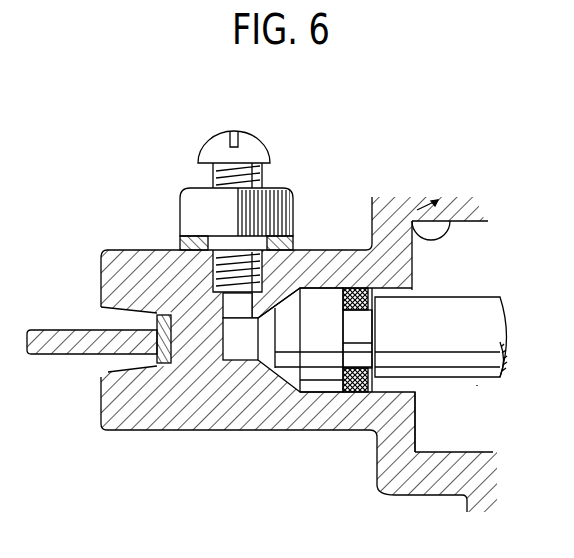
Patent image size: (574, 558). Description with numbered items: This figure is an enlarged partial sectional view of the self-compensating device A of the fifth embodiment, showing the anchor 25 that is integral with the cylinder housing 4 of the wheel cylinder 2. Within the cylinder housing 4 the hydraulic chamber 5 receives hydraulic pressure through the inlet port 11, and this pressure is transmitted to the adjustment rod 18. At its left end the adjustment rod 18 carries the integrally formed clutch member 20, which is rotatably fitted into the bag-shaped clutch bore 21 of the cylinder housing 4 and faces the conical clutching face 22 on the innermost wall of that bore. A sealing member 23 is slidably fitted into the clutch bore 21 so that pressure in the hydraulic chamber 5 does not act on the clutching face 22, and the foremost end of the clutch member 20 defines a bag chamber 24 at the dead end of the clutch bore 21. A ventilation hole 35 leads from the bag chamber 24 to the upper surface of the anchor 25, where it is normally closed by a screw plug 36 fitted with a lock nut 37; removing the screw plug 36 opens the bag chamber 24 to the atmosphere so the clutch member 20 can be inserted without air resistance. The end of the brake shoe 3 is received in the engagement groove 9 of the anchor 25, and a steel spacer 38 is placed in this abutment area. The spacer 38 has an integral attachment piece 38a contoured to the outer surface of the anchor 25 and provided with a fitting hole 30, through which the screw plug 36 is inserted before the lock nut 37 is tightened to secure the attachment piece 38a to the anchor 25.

The wheel cylinder 2 is at (470, 196).
The brake shoe 3 is at (50, 347).
The cylinder housing 4 is at (396, 211).
The hydraulic chamber 5 is at (446, 287).
The engagement groove 9 is at (117, 313).
The inlet port 11 is at (441, 236).
The adjustment rod 18 is at (452, 352).
The clutch member 20 is at (336, 351).
The clutch bore 21 is at (388, 292).
The clutching face 22 is at (283, 374).
The sealing member 23 is at (357, 388).
The bag chamber 24 is at (229, 347).
The anchor 25 is at (137, 252).
The fitting hole 30 is at (214, 256).
The ventilation hole 35 is at (222, 303).
The screw plug 36 is at (254, 143).
The lock nut 37 is at (182, 212).
The spacer 38 is at (163, 363).
The attachment piece 38a is at (293, 240).
The self-compensating device A is at (477, 385).